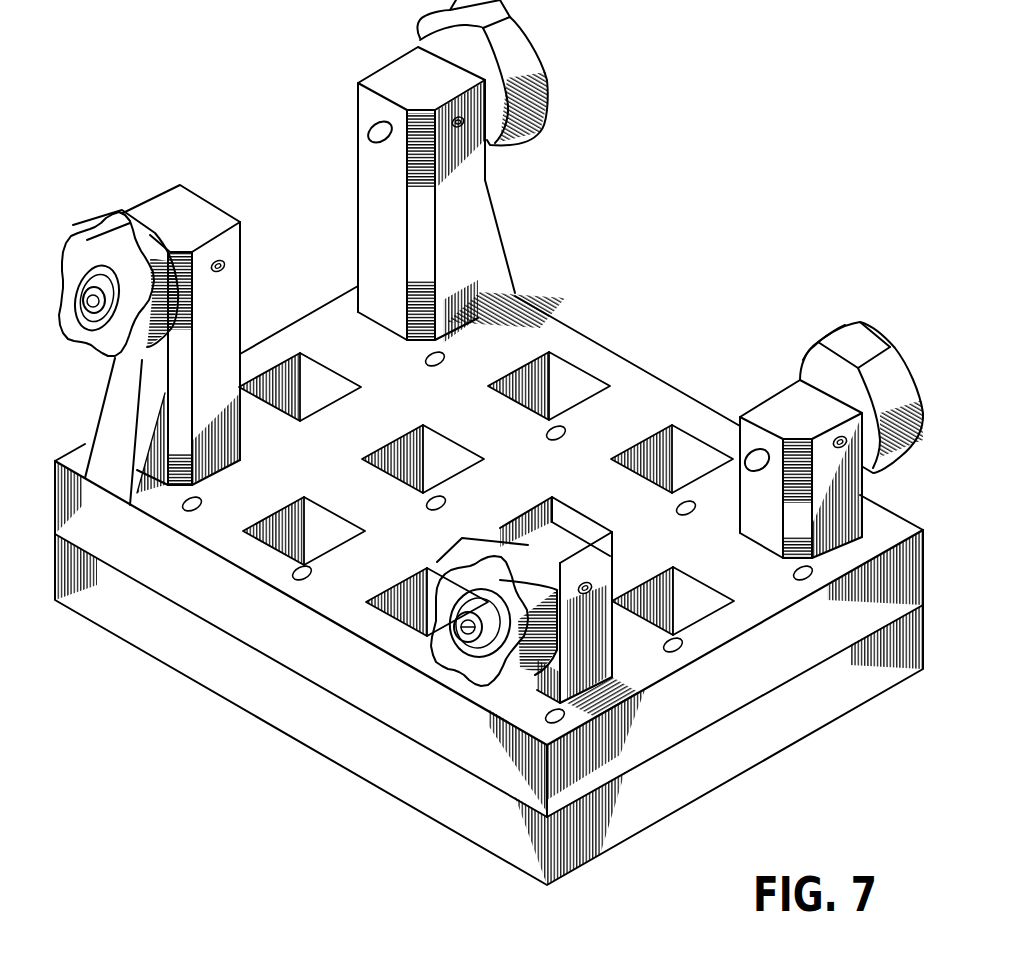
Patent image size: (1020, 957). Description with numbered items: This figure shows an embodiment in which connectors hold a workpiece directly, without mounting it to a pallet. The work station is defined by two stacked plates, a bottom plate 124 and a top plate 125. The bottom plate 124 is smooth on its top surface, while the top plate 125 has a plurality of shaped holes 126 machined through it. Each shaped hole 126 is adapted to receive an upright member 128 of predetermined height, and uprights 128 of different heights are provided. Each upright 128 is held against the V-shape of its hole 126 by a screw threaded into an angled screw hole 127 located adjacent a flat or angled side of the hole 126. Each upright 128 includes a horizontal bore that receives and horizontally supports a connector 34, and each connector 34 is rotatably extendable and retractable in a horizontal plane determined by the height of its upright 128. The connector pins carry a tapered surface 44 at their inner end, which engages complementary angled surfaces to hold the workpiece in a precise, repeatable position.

The connector 34 is at (114, 212).
The angled or tapered surface 44 is at (369, 128).
The bottom plate 124 is at (315, 727).
The top plate 125 is at (323, 665).
The shaped hole 126 is at (238, 460).
The angled screw hole 127 is at (440, 367).
The upright member 128 is at (157, 212).